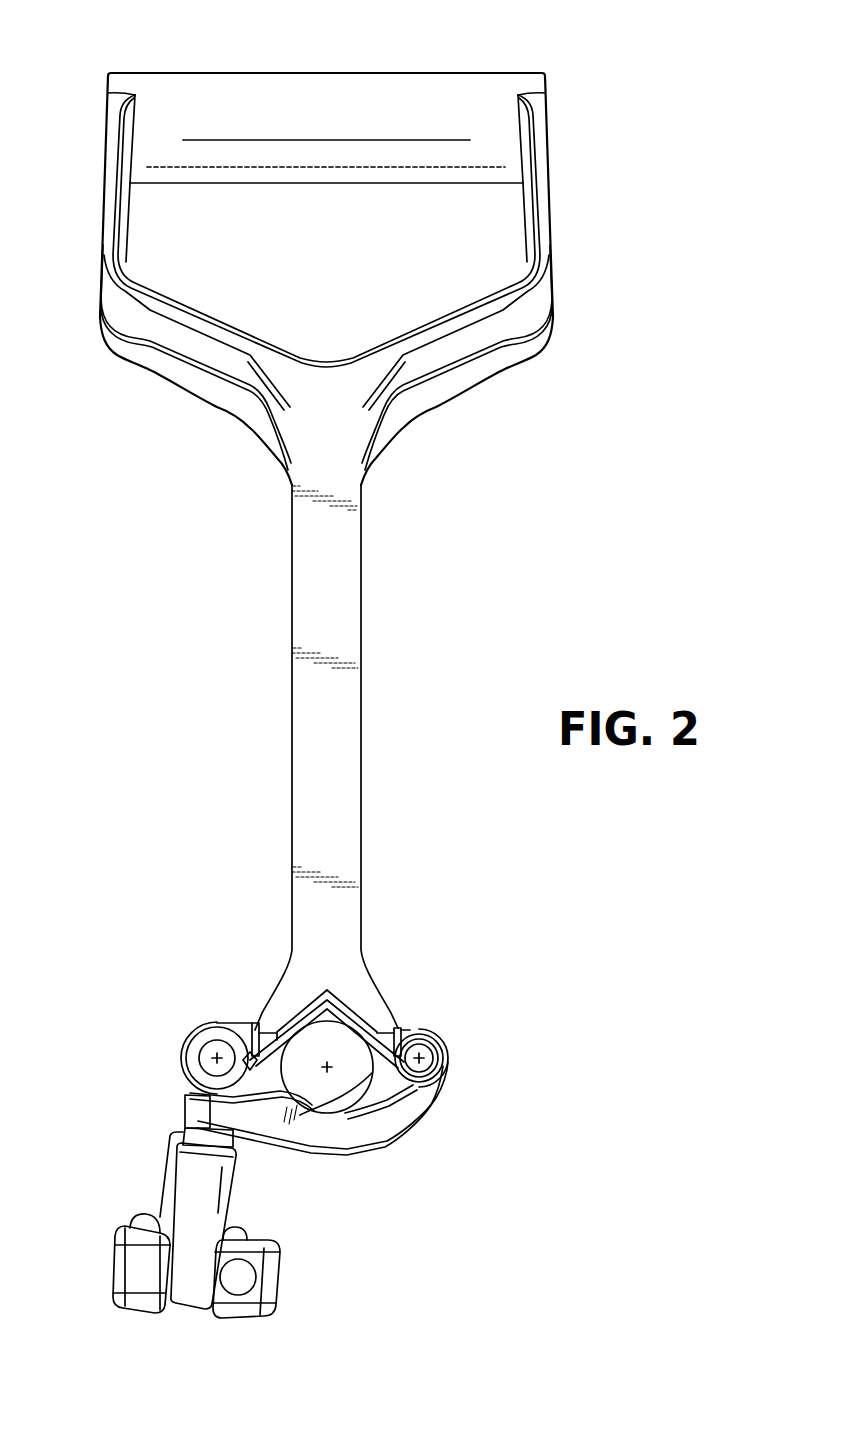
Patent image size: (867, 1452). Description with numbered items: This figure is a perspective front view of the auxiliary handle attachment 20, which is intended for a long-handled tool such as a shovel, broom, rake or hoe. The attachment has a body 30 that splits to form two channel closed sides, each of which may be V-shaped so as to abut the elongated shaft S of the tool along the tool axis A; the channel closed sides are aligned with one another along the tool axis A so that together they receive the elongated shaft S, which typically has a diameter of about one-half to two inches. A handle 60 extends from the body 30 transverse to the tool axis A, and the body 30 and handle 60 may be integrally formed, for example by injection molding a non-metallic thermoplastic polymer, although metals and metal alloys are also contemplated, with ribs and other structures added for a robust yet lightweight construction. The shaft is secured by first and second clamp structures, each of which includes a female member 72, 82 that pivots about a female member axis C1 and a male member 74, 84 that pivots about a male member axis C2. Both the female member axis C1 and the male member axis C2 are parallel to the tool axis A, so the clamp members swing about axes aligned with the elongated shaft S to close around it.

The auxiliary handle attachment 20 is at (309, 667).
The handle 60 is at (378, 88).
The body 30 is at (355, 608).
The female member 72 is at (324, 1094).
The female member 82 is at (324, 1094).
The male member 74 is at (161, 1206).
The male member 84 is at (152, 1190).
The tool axis A is at (330, 1072).
The female member axis C1 is at (421, 1056).
The male member axis C2 is at (215, 1057).
The elongated shaft S is at (372, 1074).